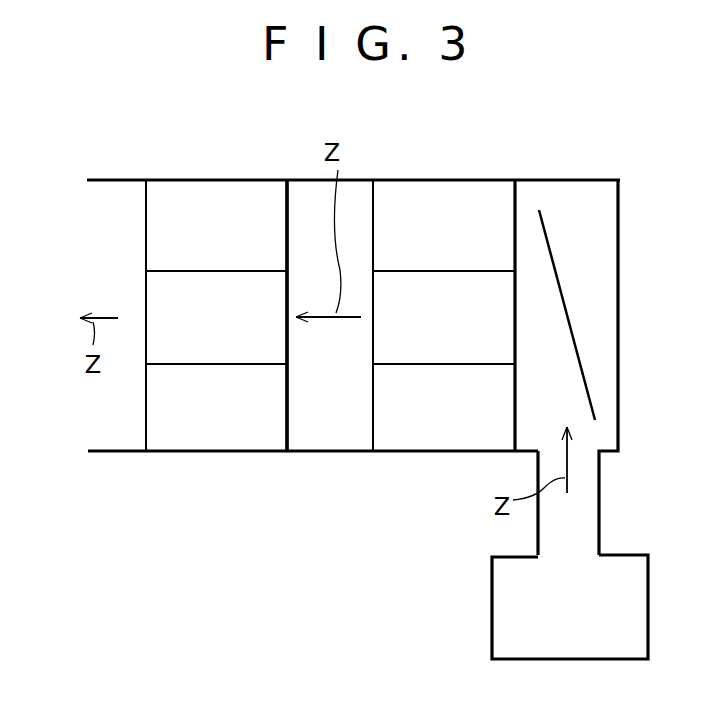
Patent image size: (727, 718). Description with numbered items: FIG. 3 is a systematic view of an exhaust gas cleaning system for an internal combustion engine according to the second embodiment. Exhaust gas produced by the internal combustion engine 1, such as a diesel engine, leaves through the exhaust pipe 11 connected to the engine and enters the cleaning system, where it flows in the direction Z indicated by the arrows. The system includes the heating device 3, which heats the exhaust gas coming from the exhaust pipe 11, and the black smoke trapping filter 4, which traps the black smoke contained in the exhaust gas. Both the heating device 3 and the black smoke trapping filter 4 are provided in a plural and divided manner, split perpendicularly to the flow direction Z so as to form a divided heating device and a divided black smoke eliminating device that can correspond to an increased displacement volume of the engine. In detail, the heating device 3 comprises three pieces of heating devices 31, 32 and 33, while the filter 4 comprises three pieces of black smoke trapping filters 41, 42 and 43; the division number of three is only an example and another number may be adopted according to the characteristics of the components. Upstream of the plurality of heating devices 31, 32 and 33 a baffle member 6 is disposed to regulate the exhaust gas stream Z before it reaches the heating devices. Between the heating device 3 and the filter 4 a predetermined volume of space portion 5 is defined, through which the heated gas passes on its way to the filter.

The internal combustion engine 1 is at (563, 652).
The exhaust pipe 11 is at (591, 511).
The heating device 3 is at (403, 455).
The heating device piece 31 is at (460, 437).
The heating device piece 32 is at (422, 290).
The heating device piece 33 is at (471, 208).
The black smoke trapping filter 4 is at (165, 455).
The black smoke trapping filter piece 41 is at (238, 437).
The black smoke trapping filter piece 42 is at (176, 283).
The black smoke trapping filter piece 43 is at (226, 200).
The space portion 5 is at (312, 436).
The baffle member 6 is at (556, 262).